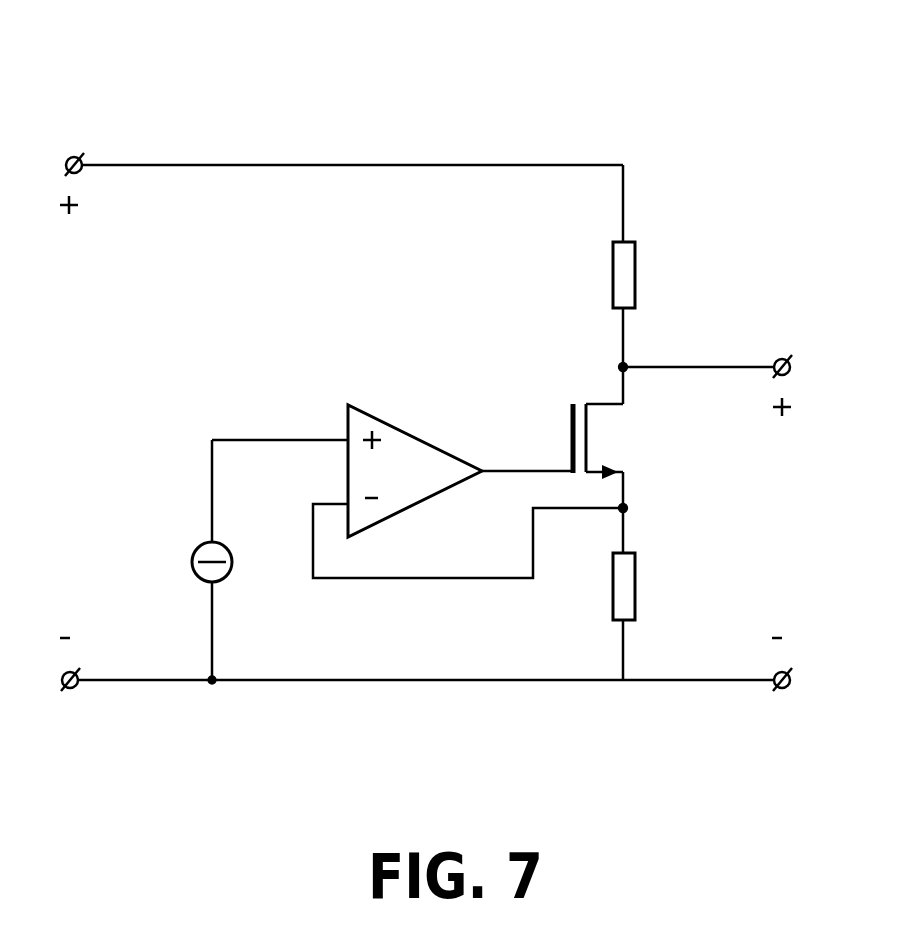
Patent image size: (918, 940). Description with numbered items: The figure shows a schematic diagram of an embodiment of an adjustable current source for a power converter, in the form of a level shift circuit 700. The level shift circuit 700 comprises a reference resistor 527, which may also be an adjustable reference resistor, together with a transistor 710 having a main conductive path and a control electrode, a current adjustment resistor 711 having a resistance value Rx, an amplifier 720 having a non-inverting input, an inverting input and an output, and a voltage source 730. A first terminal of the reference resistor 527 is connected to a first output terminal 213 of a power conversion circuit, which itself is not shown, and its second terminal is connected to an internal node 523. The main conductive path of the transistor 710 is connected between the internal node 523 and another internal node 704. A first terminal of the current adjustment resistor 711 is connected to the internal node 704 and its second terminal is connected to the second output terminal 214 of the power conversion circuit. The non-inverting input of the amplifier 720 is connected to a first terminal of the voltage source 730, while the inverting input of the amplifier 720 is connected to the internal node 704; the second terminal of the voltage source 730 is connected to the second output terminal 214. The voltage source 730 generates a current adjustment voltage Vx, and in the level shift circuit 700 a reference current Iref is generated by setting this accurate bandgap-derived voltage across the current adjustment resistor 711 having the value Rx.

The level shift circuit 700 is at (752, 101).
The first output terminal 213 is at (310, 165).
The second output terminal 214 is at (483, 680).
The reference resistor 527 is at (615, 278).
The internal node 523 is at (620, 366).
The amplifier 720 is at (400, 430).
The transistor 710 is at (586, 440).
The internal node 704 is at (628, 508).
The current adjustment resistor 711 is at (613, 598).
The voltage source 730 is at (228, 576).